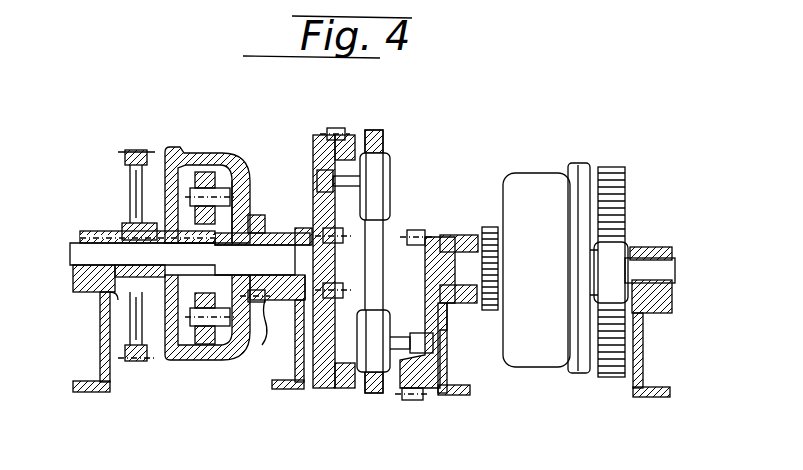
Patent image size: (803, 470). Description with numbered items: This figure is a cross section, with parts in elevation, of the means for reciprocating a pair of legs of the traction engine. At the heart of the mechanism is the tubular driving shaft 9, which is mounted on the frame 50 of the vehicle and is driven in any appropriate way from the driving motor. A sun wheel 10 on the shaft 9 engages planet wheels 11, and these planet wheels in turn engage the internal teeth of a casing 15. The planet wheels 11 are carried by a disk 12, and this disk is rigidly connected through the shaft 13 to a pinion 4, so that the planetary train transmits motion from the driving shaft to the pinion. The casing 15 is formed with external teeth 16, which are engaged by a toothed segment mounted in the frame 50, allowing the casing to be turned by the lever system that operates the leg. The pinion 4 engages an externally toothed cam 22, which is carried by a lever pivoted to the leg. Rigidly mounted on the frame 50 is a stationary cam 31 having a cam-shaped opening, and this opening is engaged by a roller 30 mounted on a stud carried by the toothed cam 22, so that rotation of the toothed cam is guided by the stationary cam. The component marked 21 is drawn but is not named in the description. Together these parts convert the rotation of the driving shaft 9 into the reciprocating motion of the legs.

The pinion 4 is at (332, 298).
The tubular driving shaft 9 is at (130, 240).
The sun wheel 10 is at (234, 216).
The planet wheels 11 is at (215, 188).
The disk 12 is at (256, 300).
The shaft 13 is at (278, 285).
The casing 15 is at (200, 352).
The external teeth 16 is at (258, 224).
The bolt 21 is at (416, 232).
The externally toothed cam 22 is at (336, 130).
The roller 30 is at (375, 174).
The stationary cam 31 is at (378, 142).
The frame 50 is at (100, 345).